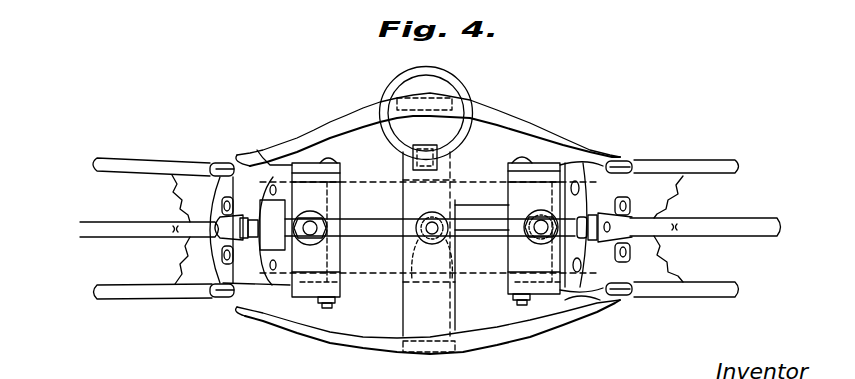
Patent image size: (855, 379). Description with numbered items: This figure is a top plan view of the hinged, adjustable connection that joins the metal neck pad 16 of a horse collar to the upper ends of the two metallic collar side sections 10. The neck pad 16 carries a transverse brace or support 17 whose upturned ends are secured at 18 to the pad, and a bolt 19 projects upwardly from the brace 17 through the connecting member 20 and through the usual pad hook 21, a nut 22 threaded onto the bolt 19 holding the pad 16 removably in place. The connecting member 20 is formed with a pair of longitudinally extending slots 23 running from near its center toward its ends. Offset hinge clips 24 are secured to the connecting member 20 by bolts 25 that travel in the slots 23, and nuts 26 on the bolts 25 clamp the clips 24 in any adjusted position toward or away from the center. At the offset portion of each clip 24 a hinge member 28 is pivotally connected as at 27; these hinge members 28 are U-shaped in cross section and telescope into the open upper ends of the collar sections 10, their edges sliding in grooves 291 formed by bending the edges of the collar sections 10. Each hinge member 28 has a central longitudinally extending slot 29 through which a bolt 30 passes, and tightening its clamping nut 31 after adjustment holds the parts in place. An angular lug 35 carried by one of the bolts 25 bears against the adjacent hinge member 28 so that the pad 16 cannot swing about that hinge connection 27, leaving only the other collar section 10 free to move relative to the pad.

The collar side section 10 is at (161, 300).
The neck pad 16 is at (373, 344).
The transverse brace or support 17 is at (453, 317).
The securing point of brace to neck pad 18 is at (436, 97).
The bolt 19 is at (438, 221).
The connecting member 20 is at (483, 175).
The pad hook 21 is at (412, 281).
The nut 22 is at (424, 215).
The longitudinally extending slot 23 is at (383, 232).
The offset hinge clip 24 is at (305, 162).
The bolt 25 is at (538, 244).
The nut 26 is at (322, 215).
The pivotal connection 27 is at (330, 307).
The hinge member 28 is at (248, 285).
The longitudinally extending slot 29 is at (573, 300).
The groove 291 is at (216, 164).
The bolt 30 is at (250, 244).
The clamping nut 31 is at (594, 213).
The angular lug 35 is at (257, 212).